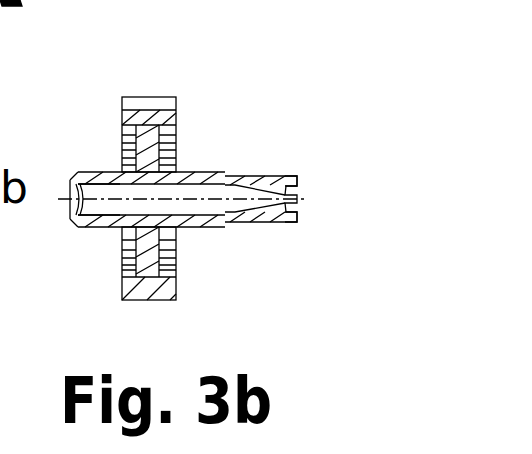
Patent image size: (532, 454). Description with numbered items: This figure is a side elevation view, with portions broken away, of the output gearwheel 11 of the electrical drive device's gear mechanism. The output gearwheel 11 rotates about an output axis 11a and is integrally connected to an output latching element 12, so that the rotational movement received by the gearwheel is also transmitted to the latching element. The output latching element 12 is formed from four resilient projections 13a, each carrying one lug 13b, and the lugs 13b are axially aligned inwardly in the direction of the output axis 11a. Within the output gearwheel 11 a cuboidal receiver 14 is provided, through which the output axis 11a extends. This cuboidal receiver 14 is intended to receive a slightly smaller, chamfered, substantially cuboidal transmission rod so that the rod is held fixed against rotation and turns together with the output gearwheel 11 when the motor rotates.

The output gearwheel 11 is at (163, 104).
The output axis 11a is at (88, 200).
The output latching element 12 is at (232, 175).
The resilient projection 13a is at (258, 220).
The lug 13b is at (292, 182).
The cuboidal receiver 14 is at (112, 207).